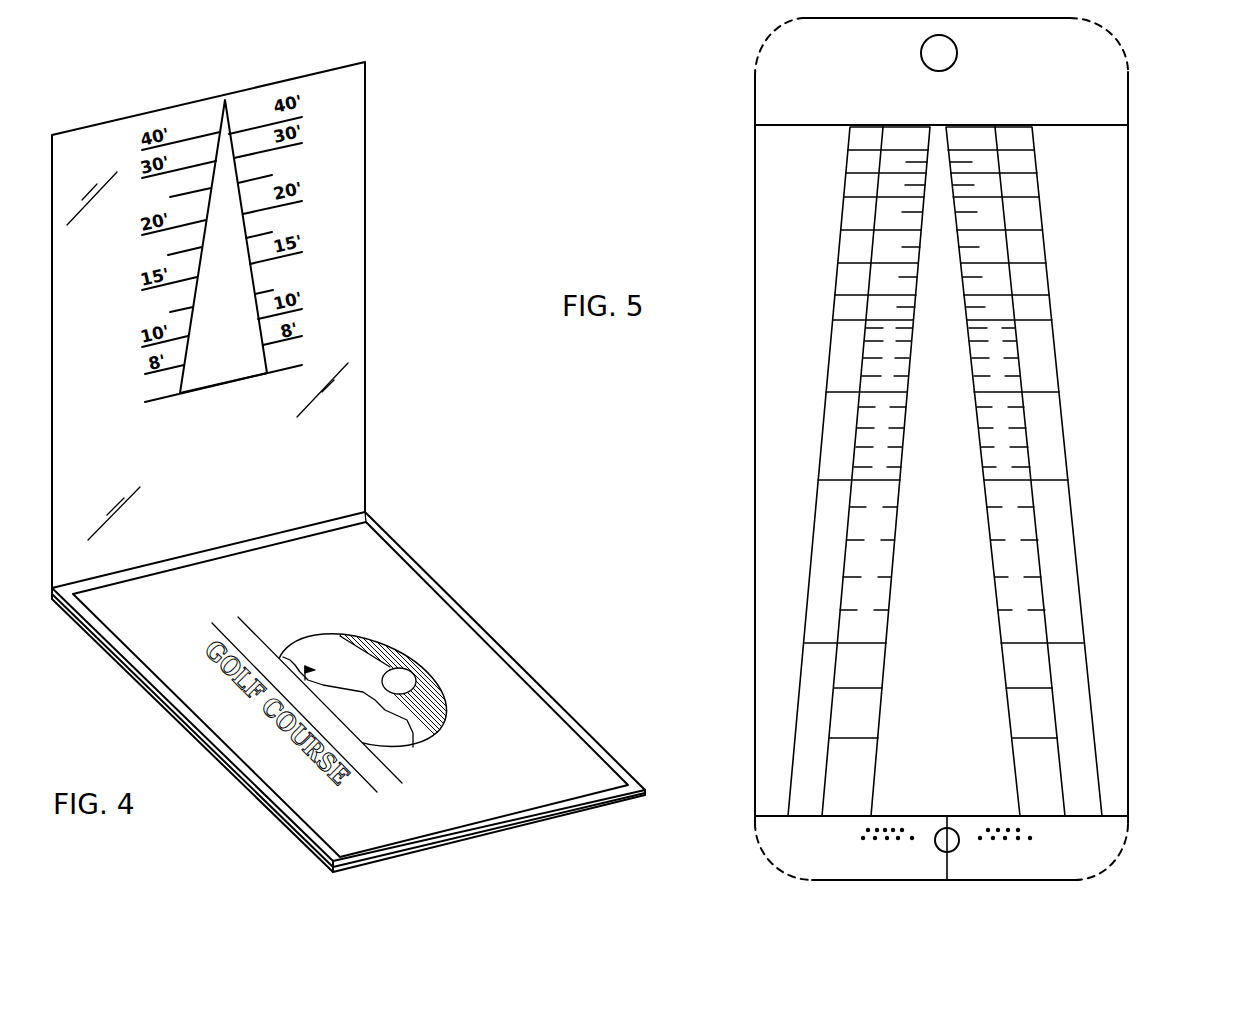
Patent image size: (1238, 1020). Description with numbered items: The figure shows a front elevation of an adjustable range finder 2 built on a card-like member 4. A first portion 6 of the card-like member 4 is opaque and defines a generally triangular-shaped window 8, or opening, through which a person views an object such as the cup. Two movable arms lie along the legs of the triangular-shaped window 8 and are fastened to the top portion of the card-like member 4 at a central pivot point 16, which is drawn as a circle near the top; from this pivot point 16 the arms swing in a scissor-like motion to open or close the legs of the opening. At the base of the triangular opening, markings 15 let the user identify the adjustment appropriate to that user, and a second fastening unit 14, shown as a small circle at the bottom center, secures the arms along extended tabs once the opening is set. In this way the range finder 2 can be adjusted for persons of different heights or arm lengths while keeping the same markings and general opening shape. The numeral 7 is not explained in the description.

The range finder 2 is at (907, 449).
The card-like member 4 is at (905, 470).
The first portion 6 is at (1074, 471).
The central scale connection 7 is at (910, 360).
The triangular-shaped window 8 is at (986, 497).
The second fastening unit 14 is at (994, 864).
The markings 15 is at (858, 843).
The pivot point 16 is at (814, 79).